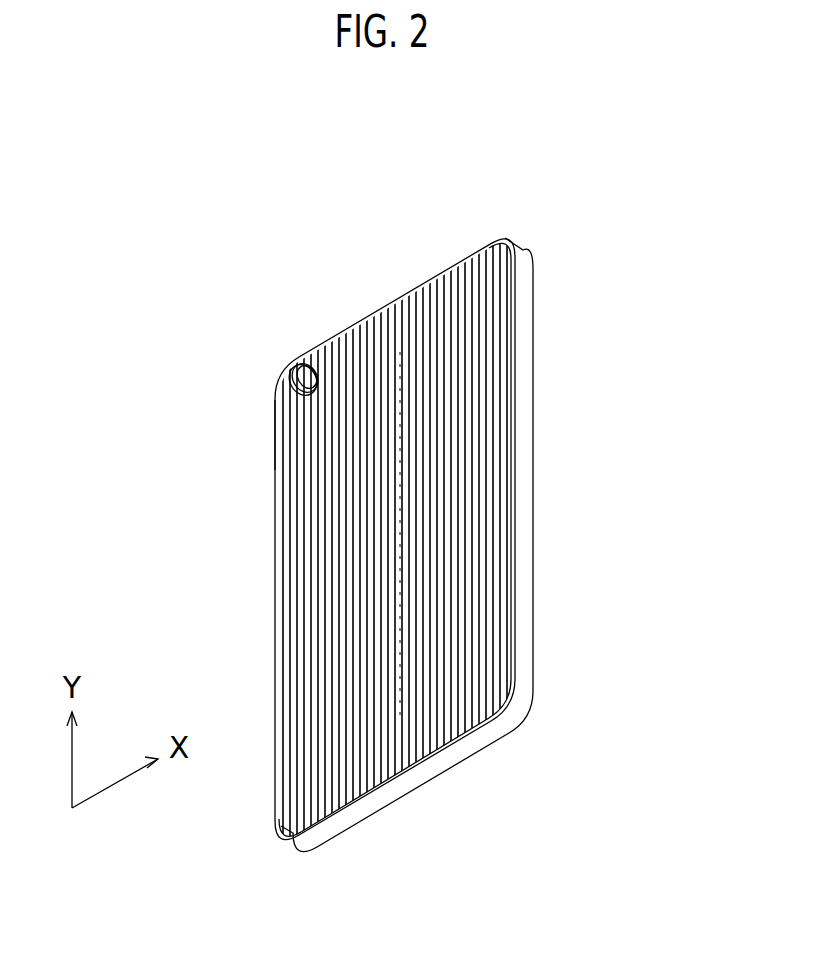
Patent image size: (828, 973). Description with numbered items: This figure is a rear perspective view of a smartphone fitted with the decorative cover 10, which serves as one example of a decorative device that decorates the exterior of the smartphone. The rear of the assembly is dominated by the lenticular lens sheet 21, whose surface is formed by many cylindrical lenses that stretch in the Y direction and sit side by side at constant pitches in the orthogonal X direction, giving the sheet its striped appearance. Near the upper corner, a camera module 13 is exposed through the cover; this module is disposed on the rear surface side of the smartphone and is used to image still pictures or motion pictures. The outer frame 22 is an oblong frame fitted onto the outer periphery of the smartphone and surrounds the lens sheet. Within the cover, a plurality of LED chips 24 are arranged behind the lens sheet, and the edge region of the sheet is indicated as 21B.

The decorative cover 10 is at (385, 538).
The camera module 13 is at (295, 364).
The lenticular lens sheet 21 is at (462, 744).
The side edge of front plate 21B is at (283, 393).
The outer frame 22 is at (538, 446).
The LED chips 24 is at (400, 578).